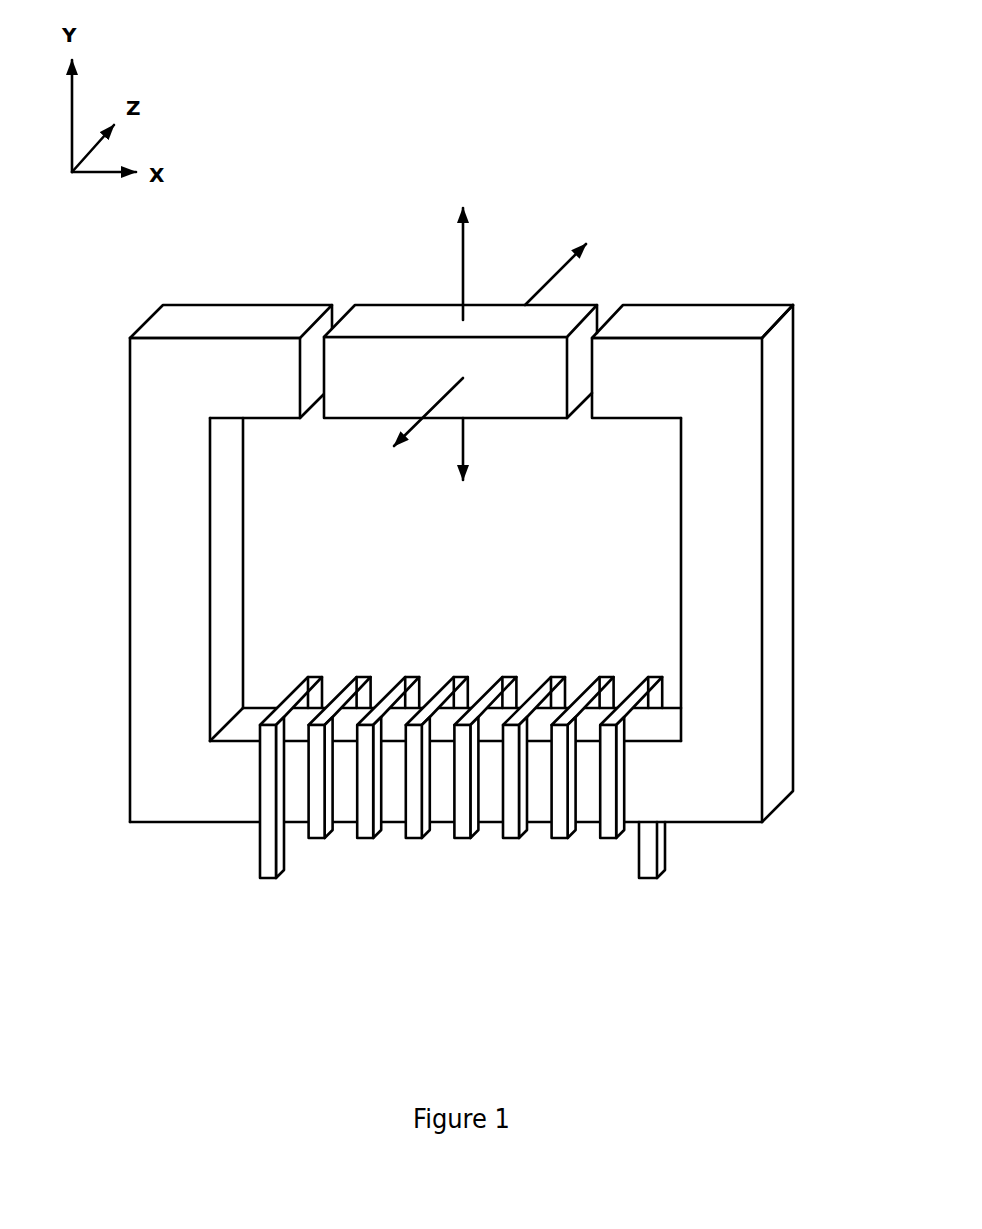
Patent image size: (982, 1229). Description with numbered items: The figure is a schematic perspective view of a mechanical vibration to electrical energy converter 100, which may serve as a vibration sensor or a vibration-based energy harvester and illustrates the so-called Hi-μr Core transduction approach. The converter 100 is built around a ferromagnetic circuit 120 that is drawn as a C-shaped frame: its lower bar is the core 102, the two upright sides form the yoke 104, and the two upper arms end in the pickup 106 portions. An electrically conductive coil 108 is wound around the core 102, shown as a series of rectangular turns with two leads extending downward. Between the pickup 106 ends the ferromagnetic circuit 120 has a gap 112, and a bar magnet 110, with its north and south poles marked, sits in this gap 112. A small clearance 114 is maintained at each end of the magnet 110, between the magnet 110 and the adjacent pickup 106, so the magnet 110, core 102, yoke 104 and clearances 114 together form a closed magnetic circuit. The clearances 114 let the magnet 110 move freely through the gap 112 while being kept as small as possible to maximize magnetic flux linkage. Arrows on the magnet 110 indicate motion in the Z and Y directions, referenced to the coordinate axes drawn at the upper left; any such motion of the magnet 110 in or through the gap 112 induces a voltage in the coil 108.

The mechanical vibration to electrical energy converter 100 is at (518, 80).
The core 102 is at (722, 788).
The yoke 104 is at (93, 554).
The pickup 106 is at (222, 283).
The electrically conductive coil 108 is at (269, 859).
The magnet 110 is at (478, 375).
The gap 112 is at (436, 515).
The clearance 114 is at (339, 299).
The ferromagnetic circuit 120 is at (709, 203).